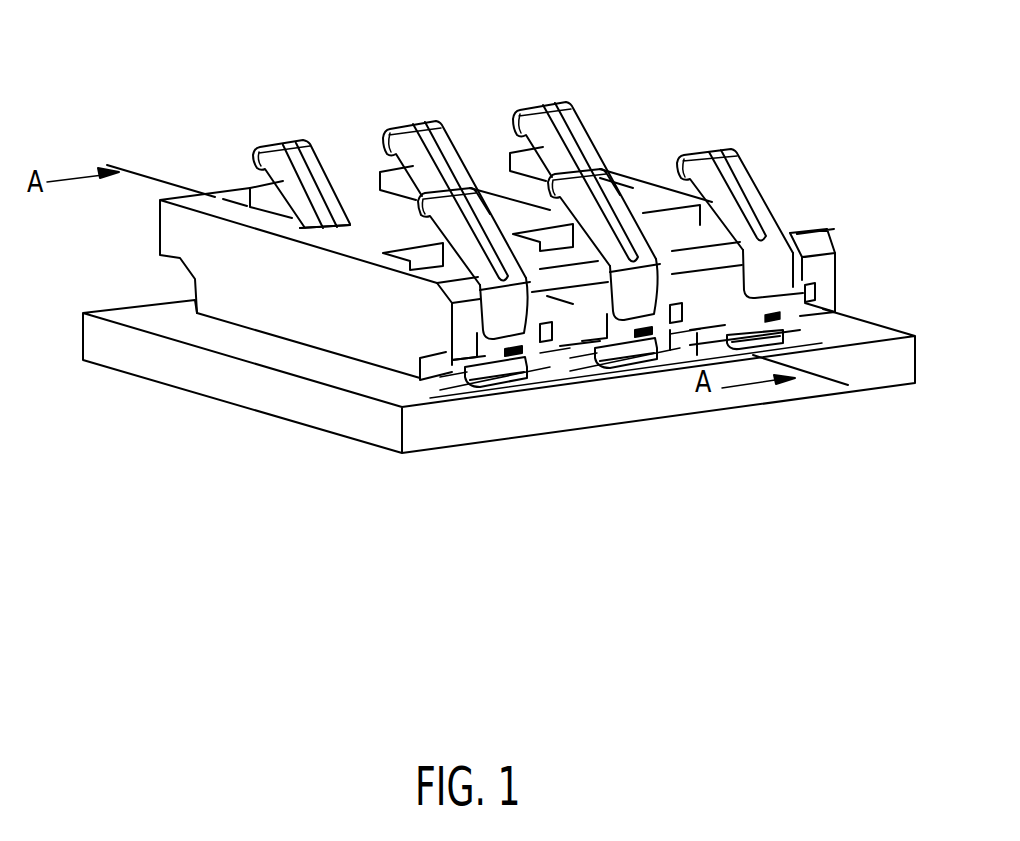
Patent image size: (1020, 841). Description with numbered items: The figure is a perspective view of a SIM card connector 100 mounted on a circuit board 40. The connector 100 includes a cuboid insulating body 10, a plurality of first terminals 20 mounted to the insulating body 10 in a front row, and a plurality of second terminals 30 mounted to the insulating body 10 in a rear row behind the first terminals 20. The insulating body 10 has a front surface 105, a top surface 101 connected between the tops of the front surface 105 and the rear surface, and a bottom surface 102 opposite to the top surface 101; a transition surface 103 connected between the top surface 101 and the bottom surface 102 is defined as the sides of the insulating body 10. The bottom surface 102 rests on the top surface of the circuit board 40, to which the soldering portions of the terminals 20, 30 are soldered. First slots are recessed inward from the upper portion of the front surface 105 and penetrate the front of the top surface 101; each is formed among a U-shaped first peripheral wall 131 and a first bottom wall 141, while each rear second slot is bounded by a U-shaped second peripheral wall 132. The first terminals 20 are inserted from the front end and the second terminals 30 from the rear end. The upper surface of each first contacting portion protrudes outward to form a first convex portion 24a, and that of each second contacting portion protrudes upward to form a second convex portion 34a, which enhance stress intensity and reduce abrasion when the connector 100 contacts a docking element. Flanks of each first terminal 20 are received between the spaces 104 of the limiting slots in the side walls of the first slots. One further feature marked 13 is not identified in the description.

The SIM card connector 100 is at (402, 94).
The insulating body 10 is at (142, 238).
The top surface 101 is at (621, 178).
The bottom surface 102 is at (836, 322).
The transition surface 103 is at (370, 303).
The space of the limiting slot 104 is at (531, 345).
The front surface 105 is at (828, 289).
The opening 13 is at (433, 253).
The first peripheral wall 131 is at (815, 241).
The second peripheral wall 132 is at (254, 199).
The first bottom wall 141 is at (478, 348).
The first terminal 20 is at (780, 208).
The first convex portion 24a is at (702, 156).
The second terminal 30 is at (444, 227).
The second convex portion 34a is at (280, 142).
The circuit board 40 is at (210, 378).